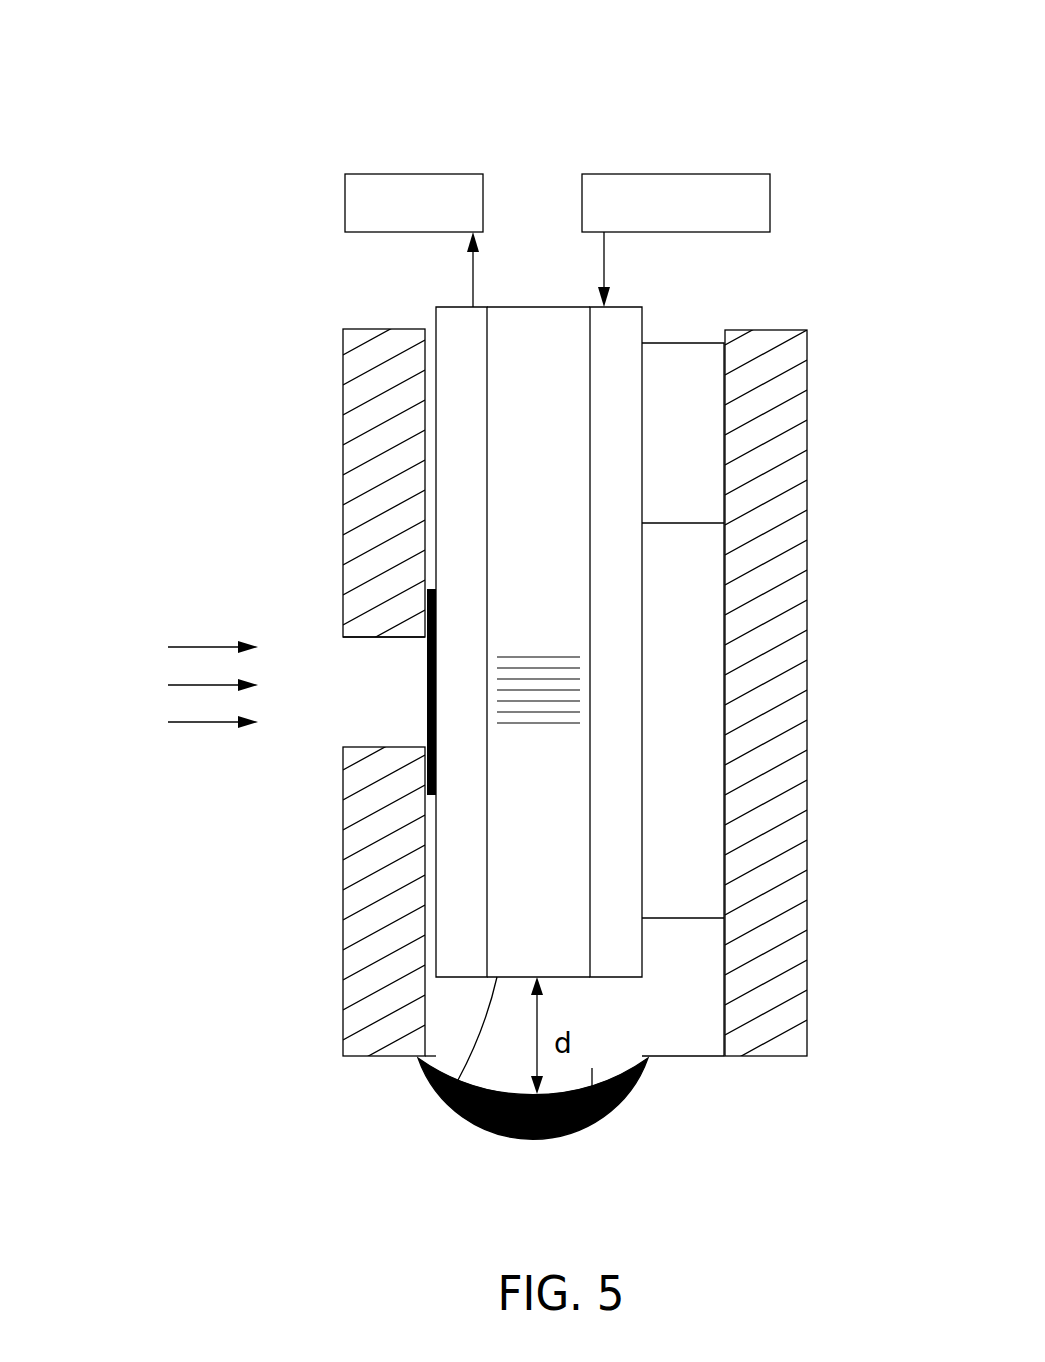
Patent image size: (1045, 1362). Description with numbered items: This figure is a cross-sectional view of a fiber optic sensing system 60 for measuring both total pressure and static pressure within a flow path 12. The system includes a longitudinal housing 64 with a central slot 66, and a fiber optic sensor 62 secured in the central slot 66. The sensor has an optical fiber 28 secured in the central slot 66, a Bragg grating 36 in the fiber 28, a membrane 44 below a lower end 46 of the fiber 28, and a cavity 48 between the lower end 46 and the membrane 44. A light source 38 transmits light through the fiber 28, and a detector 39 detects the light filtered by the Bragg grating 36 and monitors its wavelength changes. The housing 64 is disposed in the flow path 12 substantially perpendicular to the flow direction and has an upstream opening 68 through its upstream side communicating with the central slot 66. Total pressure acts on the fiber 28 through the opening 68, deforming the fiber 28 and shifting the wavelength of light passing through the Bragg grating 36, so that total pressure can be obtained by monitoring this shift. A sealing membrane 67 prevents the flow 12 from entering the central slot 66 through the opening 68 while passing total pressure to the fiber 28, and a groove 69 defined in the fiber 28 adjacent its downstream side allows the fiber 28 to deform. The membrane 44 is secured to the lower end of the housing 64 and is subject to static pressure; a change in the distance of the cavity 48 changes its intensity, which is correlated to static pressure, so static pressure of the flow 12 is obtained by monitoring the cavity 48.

The fiber optic sensing system 60 is at (175, 89).
The detector 39 is at (413, 174).
The light source 38 is at (772, 198).
The fiber optic sensor 62 is at (447, 319).
The optical fiber 28 is at (633, 317).
The central slot 66 is at (433, 391).
The upstream opening 68 is at (347, 649).
The sealing membrane 67 is at (425, 733).
The flow path 12 is at (190, 647).
The Bragg grating 36 is at (563, 657).
The groove 69 is at (700, 703).
The longitudinal housing 64 is at (797, 902).
The membrane 44 is at (527, 1140).
The lower end 46 is at (443, 1098).
The cavity 48 is at (603, 1118).